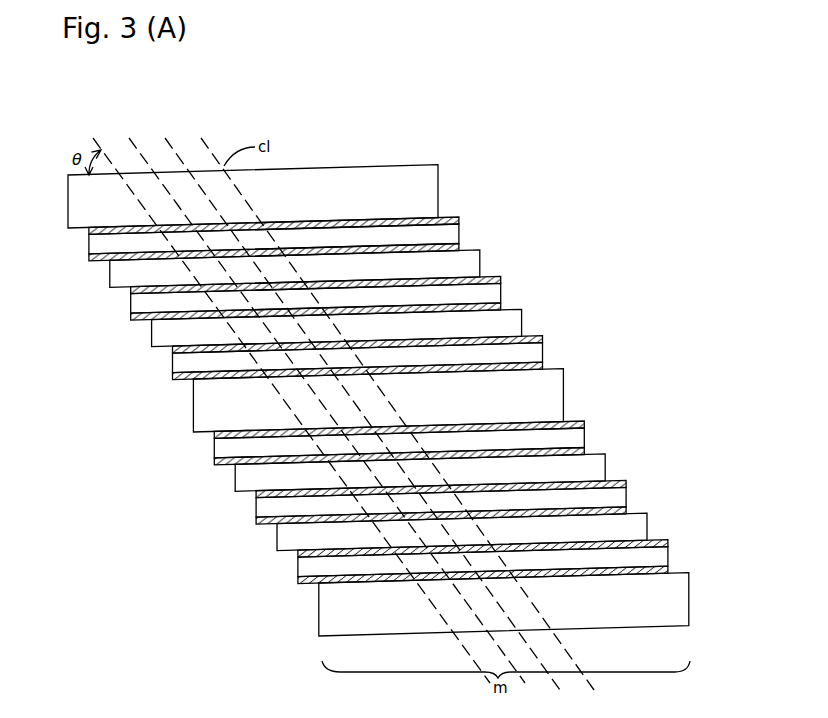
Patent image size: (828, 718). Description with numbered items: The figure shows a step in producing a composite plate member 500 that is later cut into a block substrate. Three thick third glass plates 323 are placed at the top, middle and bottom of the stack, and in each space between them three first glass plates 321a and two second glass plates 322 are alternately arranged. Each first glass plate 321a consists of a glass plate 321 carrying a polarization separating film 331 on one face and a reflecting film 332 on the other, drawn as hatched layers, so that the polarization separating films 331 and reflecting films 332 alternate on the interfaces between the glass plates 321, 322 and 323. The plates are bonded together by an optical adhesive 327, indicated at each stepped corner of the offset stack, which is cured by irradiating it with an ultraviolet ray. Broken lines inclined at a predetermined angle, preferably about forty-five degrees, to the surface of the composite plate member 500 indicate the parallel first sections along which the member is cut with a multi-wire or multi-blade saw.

The composite plate member 500 is at (457, 100).
The third glass plate 323 is at (440, 175).
The polarization separating film 331 is at (460, 220).
The glass plate 321 is at (460, 233).
The reflecting film 332 is at (378, 406).
The first glass plate 321a is at (410, 381).
The second glass plate 322 is at (481, 263).
The optical adhesive 327 is at (89, 227).